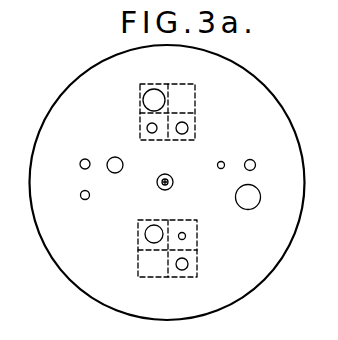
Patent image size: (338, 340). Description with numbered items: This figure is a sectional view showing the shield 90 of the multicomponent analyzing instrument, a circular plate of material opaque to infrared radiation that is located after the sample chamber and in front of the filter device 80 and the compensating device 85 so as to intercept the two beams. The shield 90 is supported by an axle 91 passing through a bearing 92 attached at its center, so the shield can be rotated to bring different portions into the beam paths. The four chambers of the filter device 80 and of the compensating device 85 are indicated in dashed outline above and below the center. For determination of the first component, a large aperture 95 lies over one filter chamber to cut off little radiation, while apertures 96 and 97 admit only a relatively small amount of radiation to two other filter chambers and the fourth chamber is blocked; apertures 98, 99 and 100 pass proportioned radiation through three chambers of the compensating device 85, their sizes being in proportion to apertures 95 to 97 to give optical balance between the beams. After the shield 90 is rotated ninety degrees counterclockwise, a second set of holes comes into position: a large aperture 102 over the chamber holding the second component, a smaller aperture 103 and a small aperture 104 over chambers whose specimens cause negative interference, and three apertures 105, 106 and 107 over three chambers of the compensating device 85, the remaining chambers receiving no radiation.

The shield 90 is at (75, 82).
The filter device 80 is at (192, 84).
The compensating device 85 is at (185, 277).
The aperture 95 is at (143, 100).
The aperture 96 is at (147, 128).
The aperture 97 is at (188, 128).
The axle 91 is at (173, 183).
The bearing 92 is at (165, 174).
The aperture 98 is at (145, 234).
The aperture 99 is at (186, 236).
The aperture 100 is at (188, 264).
The aperture 102 is at (261, 197).
The aperture 103 is at (253, 160).
The aperture 104 is at (229, 157).
The aperture 105 is at (116, 173).
The aperture 106 is at (82, 168).
The aperture 107 is at (82, 199).